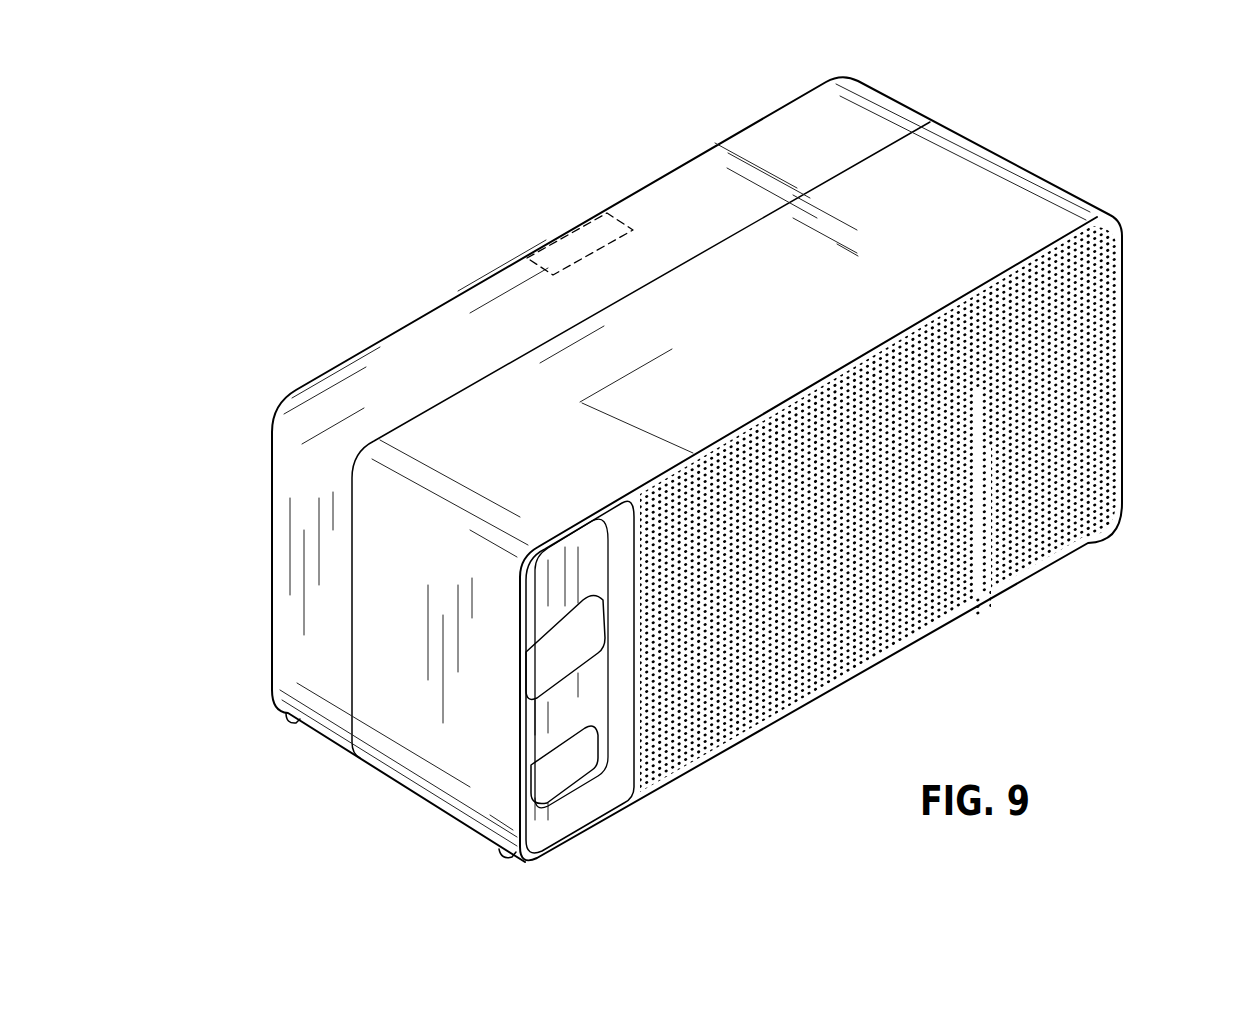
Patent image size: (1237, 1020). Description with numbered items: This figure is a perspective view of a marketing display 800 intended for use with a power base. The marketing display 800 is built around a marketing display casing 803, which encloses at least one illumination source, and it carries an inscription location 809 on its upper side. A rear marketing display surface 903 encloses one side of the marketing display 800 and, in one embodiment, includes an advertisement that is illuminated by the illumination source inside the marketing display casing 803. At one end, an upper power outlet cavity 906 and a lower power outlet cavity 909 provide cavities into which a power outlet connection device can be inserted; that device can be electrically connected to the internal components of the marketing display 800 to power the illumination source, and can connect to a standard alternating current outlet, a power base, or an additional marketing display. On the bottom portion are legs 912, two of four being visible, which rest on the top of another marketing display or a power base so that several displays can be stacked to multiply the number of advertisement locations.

The marketing display 800 is at (1123, 142).
The marketing display casing 803 is at (1043, 179).
The inscription location 809 is at (563, 256).
The rear marketing display surface 903 is at (747, 476).
The upper power outlet cavity 906 is at (566, 645).
The lower power outlet cavity 909 is at (562, 772).
The legs 912 is at (296, 720).